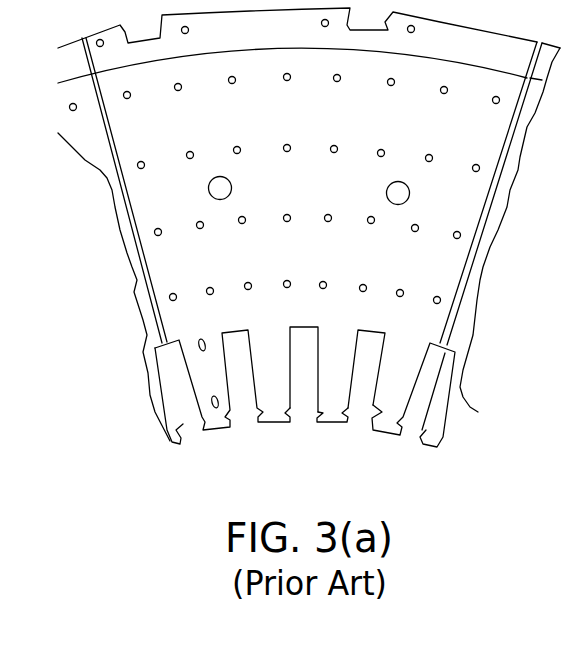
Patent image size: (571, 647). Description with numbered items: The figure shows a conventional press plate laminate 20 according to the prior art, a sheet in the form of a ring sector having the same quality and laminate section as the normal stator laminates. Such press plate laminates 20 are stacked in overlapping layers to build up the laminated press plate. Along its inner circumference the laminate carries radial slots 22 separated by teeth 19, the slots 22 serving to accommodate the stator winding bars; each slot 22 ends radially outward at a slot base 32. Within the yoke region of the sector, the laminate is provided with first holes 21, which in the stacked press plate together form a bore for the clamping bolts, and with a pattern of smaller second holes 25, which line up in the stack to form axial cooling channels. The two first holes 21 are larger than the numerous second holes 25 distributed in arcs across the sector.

The teeth 19 is at (337, 400).
The press plate laminate 20 is at (195, 253).
The first holes 21 is at (217, 193).
The radial slots 22 is at (368, 375).
The second holes 25 is at (413, 228).
The slot base 32 is at (300, 330).